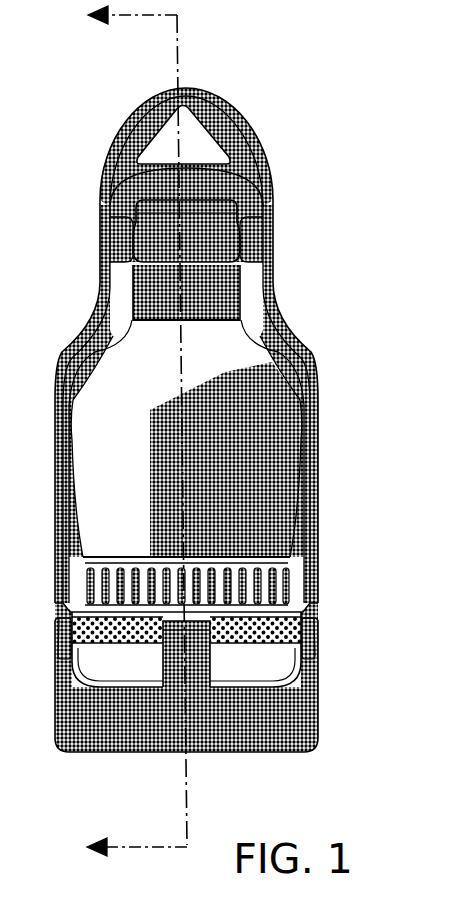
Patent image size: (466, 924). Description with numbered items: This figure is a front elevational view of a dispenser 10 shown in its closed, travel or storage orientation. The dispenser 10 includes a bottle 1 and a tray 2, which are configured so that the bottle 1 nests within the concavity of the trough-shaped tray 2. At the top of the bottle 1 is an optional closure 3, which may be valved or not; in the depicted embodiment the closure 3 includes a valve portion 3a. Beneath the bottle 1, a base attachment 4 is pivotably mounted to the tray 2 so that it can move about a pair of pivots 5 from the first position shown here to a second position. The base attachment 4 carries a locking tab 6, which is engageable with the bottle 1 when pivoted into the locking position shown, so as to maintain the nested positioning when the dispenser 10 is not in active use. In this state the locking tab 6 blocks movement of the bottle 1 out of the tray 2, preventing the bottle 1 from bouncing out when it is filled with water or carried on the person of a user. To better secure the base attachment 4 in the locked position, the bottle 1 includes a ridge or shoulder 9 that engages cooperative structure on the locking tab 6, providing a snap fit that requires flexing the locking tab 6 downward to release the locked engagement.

The dispenser 10 is at (365, 163).
The bottle 1 is at (145, 441).
The tray 2 is at (303, 353).
The closure 3 is at (163, 283).
The valve portion 3a is at (163, 237).
The base attachment 4 is at (119, 434).
The pivots 5 is at (313, 635).
The locking tab 6 is at (177, 638).
The ridge or shoulder 9 is at (297, 645).